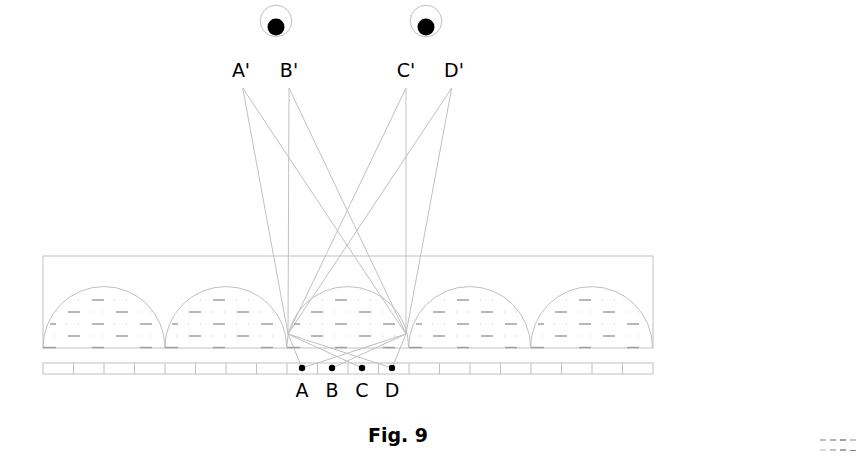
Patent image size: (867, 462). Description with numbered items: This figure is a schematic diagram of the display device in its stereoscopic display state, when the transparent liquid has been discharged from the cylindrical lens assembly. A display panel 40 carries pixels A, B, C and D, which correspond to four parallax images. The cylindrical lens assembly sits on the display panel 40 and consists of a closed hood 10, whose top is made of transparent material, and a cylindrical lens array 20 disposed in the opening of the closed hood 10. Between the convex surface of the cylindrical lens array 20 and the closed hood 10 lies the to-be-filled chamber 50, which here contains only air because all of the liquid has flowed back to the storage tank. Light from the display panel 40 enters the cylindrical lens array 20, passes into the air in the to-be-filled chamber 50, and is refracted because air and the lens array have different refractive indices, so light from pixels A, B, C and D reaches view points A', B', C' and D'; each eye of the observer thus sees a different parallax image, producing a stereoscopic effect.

The closed hood 10 is at (653, 290).
The cylindrical lens array 20 is at (623, 324).
The display panel 40 is at (630, 368).
The to-be-filled chamber 50 is at (518, 291).